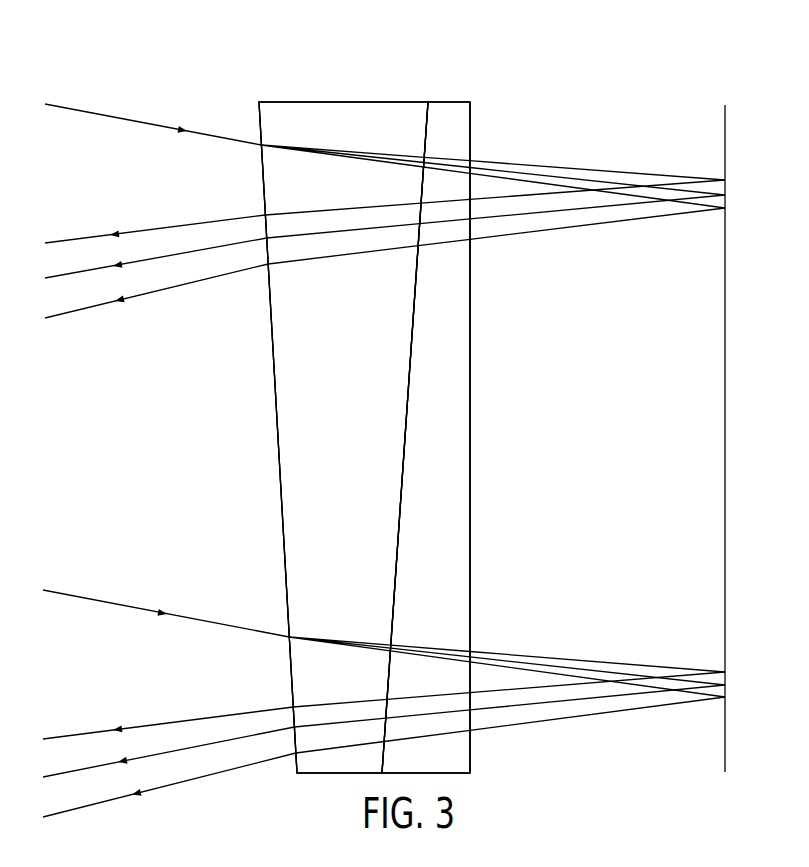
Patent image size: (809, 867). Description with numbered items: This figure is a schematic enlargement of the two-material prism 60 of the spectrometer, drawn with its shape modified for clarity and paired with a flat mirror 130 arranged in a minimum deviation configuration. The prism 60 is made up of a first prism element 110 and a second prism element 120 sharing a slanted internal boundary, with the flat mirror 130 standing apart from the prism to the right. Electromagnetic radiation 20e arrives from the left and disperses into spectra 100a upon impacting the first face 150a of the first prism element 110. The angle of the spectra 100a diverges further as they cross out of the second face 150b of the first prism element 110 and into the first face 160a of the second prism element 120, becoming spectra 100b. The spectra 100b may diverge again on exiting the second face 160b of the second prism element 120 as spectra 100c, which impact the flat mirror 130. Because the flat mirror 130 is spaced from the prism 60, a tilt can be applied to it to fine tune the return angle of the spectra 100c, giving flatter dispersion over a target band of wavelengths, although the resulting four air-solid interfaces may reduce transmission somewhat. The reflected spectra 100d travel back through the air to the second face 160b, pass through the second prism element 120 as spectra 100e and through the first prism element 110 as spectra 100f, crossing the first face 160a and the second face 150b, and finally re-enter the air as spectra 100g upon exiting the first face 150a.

The electromagnetic radiation 20e is at (92, 112).
The prism 60 is at (345, 92).
The first prism element 110 is at (340, 380).
The second prism element 120 is at (445, 485).
The flat mirror 130 is at (725, 320).
The first face of first prism element 150a is at (257, 118).
The second face of first prism element 150b is at (413, 310).
The first face of second prism element 160a is at (413, 340).
The second face of second prism element 160b is at (468, 410).
The spectra 100a is at (349, 142).
The spectra 100b is at (440, 152).
The spectra 100c is at (510, 161).
The spectra 100d is at (526, 214).
The spectra 100e is at (442, 216).
The spectra 100f is at (332, 226).
The spectra 100g is at (157, 251).